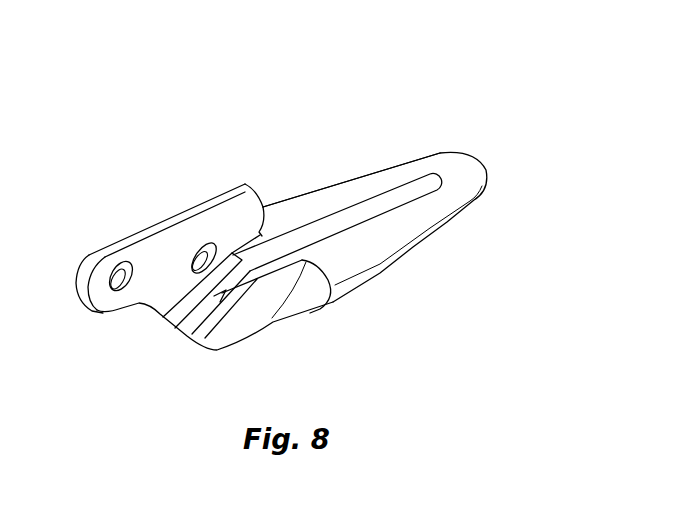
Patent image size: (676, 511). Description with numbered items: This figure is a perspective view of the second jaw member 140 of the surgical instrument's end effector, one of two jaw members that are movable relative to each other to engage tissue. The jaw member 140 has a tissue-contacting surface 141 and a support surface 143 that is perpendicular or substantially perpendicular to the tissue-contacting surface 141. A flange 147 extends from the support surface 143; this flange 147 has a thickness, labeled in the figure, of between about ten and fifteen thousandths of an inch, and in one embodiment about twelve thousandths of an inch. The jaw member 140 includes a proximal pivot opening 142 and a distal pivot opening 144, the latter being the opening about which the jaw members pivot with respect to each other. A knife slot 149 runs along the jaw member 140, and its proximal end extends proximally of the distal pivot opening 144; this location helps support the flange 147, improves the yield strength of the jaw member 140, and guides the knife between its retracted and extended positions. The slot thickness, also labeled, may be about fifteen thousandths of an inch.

The second jaw member 140 is at (226, 96).
The tissue-contacting surface 141 is at (407, 234).
The proximal pivot opening 142 is at (125, 292).
The support surface 143 is at (302, 225).
The distal pivot opening 144 is at (195, 251).
The flange 147 is at (145, 251).
The knife slot 149 is at (391, 190).